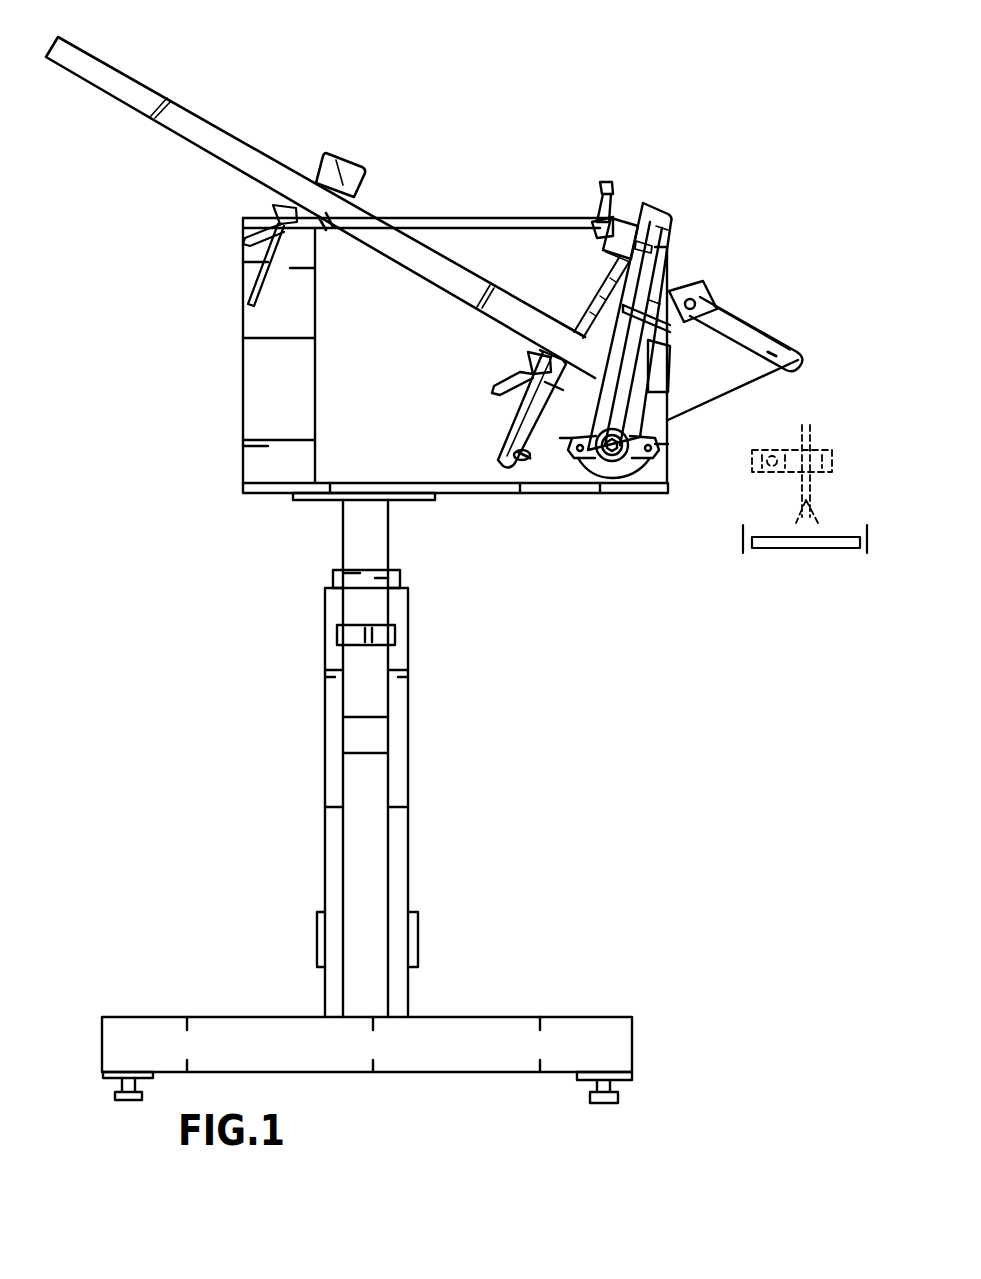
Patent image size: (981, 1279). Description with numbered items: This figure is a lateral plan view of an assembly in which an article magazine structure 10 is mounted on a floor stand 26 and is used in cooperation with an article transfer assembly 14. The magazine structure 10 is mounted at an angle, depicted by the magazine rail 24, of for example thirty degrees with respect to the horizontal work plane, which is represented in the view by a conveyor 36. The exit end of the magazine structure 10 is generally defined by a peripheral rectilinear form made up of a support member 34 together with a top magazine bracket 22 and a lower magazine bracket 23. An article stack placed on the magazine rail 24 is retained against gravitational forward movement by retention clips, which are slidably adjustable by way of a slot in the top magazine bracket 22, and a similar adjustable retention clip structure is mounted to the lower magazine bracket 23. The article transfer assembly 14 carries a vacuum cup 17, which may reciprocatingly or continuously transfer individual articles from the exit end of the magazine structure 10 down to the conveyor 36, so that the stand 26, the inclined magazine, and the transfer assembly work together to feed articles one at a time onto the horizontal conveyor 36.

The article magazine structure 10 is at (630, 172).
The article transfer assembly 14 is at (771, 318).
The vacuum cup 17 is at (632, 268).
The top magazine bracket 22 is at (671, 240).
The lower magazine bracket 23 is at (544, 471).
The magazine rail 24 is at (232, 154).
The floor stand 26 is at (426, 726).
The support member 34 is at (668, 288).
The conveyor 36 is at (781, 568).